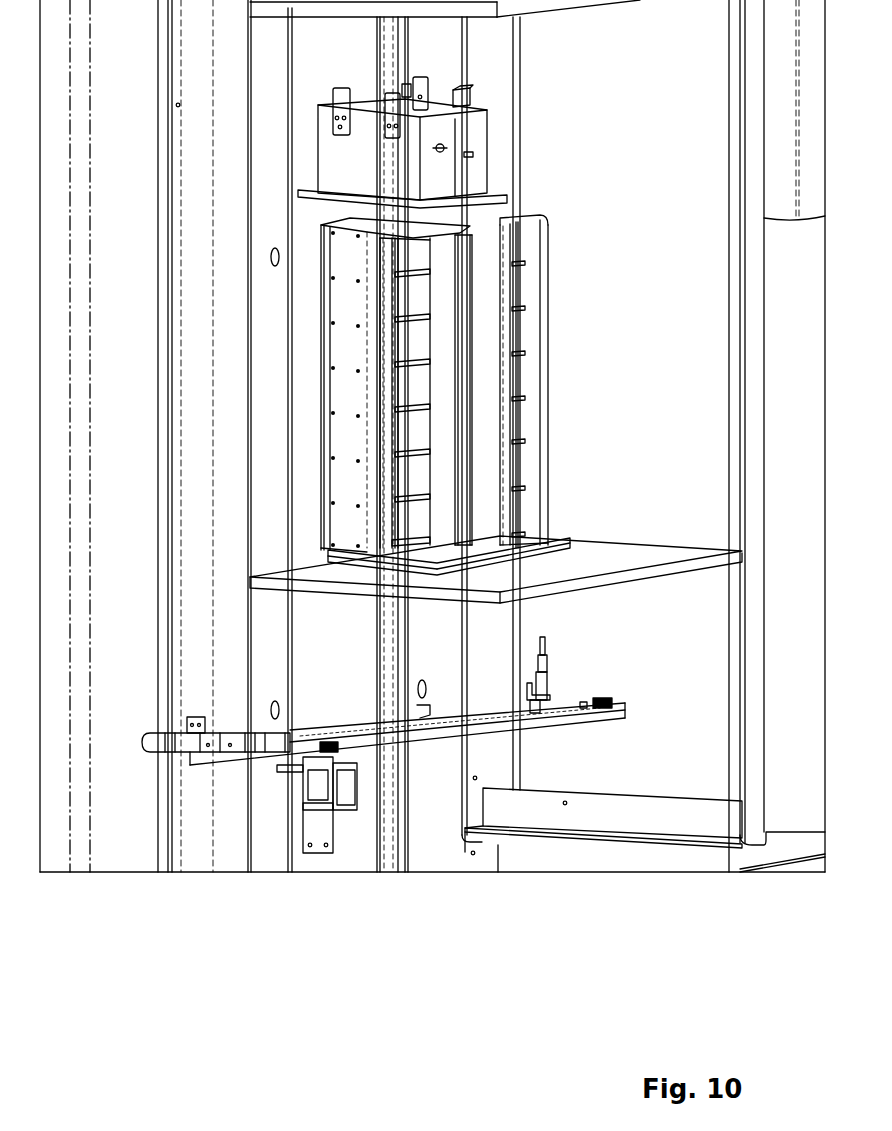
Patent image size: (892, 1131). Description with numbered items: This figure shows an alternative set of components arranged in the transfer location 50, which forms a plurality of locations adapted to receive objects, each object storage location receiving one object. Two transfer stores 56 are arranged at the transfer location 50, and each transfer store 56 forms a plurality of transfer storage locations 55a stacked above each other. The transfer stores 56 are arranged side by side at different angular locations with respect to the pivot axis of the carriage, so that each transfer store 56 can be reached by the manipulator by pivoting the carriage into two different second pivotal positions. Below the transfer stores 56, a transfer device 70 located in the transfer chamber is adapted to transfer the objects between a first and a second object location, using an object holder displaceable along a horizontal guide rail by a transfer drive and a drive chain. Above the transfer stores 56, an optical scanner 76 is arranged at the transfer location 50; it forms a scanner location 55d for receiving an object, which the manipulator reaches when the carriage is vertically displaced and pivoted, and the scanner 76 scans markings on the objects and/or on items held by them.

The transfer location 50 is at (600, 430).
The transfer storage location 55a is at (413, 498).
The scanner location 55d is at (462, 100).
The transfer store 56 is at (545, 330).
The transfer device 70 is at (568, 742).
The optical scanner 76 is at (480, 170).